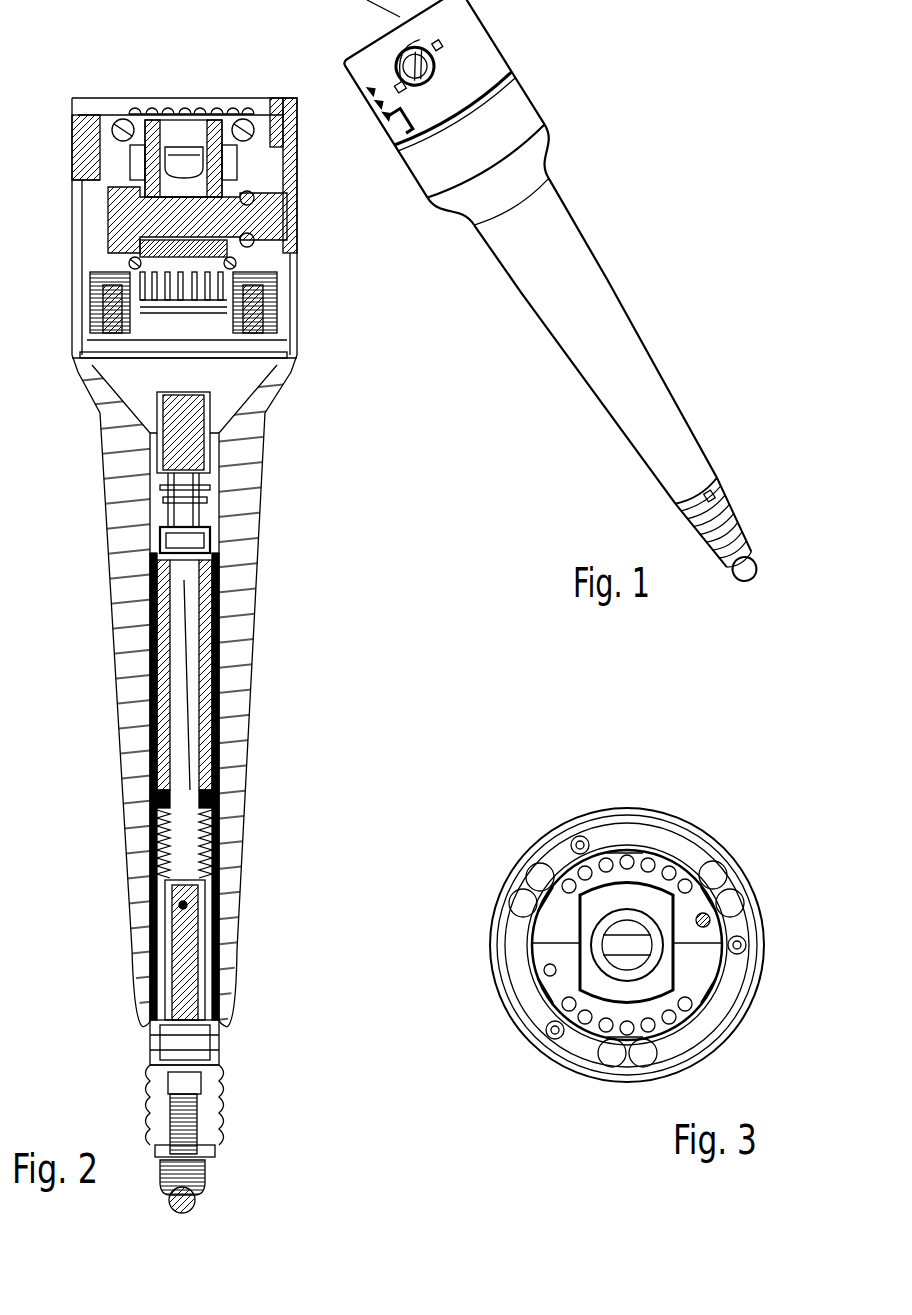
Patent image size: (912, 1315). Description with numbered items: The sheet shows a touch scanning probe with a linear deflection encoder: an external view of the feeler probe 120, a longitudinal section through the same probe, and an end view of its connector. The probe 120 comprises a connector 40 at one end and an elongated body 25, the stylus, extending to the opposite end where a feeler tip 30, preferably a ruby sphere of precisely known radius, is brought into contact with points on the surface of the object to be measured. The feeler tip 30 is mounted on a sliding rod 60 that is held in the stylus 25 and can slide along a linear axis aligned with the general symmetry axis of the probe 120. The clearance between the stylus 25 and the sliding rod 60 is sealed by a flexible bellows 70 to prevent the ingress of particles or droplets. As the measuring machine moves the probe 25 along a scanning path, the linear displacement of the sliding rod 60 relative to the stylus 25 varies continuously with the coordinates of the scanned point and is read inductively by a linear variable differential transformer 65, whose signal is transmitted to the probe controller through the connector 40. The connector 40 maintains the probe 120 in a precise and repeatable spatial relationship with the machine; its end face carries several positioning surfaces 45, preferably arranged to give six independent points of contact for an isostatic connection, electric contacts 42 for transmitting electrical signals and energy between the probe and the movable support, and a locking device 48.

In FIG. 2, the feeler probe 120 is at (340, 435).
In FIG. 1, the feeler probe 120 is at (640, 138).
In FIG. 2, the elongated body 25 is at (236, 540).
In FIG. 1, the elongated body 25 is at (667, 375).
In FIG. 2, the feeler tip 30 is at (192, 1210).
In FIG. 1, the feeler tip 30 is at (749, 590).
In FIG. 2, the connector 40 is at (70, 112).
In FIG. 3, the connector 40 is at (533, 1002).
In FIG. 2, the electric contacts 42 is at (205, 118).
In FIG. 3, the electric contacts 42 is at (668, 870).
In FIG. 3, the positioning surfaces 45 is at (540, 877).
In FIG. 2, the locking device 48 is at (152, 145).
In FIG. 3, the locking device 48 is at (603, 923).
In FIG. 2, the sliding rod 60 is at (187, 995).
In FIG. 2, the linear variable differential transformer 65 is at (242, 732).
In FIG. 2, the bellows 70 is at (220, 1125).